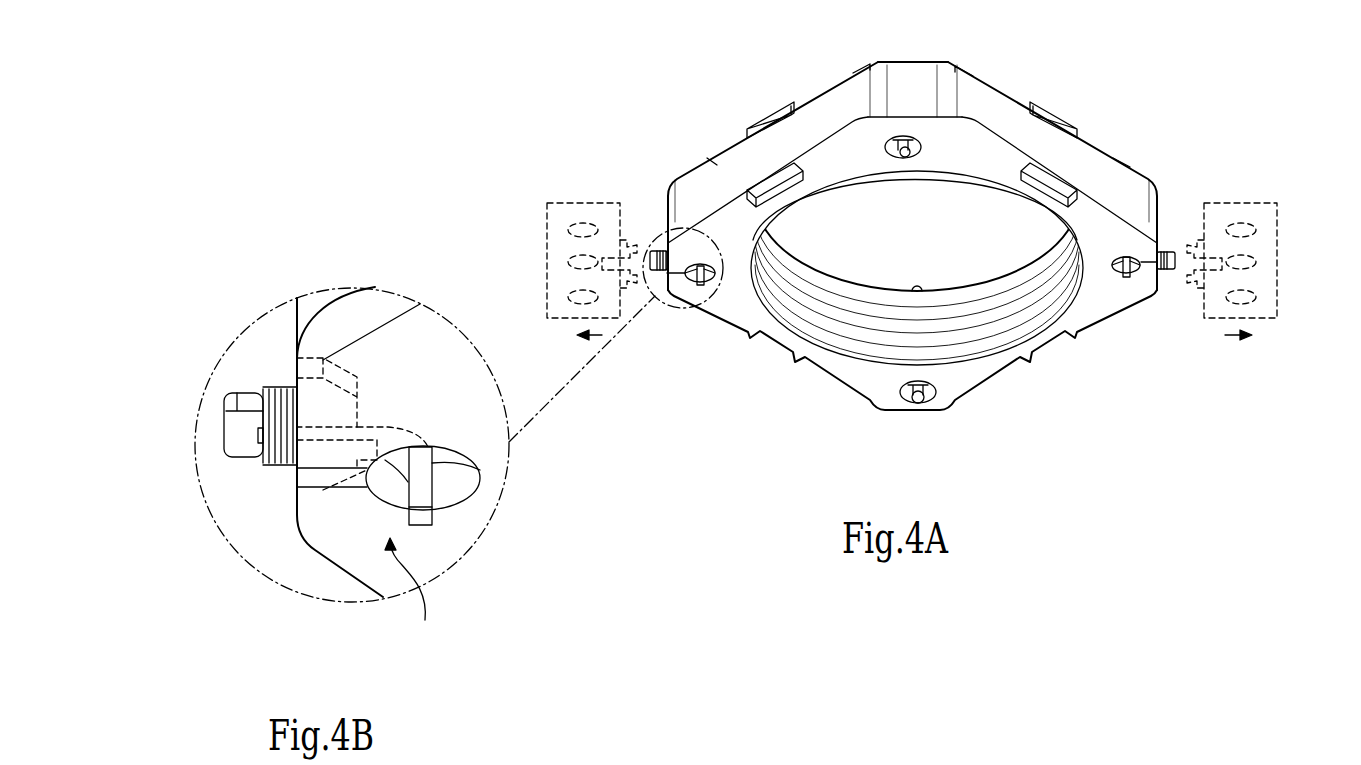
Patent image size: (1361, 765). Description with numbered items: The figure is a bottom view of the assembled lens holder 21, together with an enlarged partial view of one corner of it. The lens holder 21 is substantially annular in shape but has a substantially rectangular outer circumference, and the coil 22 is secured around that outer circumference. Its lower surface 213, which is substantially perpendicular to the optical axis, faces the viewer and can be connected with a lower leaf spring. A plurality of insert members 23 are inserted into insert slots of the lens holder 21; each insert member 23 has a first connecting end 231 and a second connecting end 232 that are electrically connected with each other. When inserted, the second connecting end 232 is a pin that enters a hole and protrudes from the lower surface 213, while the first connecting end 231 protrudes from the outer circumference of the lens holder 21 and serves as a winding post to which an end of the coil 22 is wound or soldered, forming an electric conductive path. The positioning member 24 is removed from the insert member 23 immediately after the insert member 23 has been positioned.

In FIG. 4A, the lens holder 21 is at (1242, 91).
In FIG. 4A, the coil 22 is at (750, 157).
In FIG. 4B, the coil 22 is at (267, 383).
In FIG. 4B, the insert member 23 is at (200, 396).
In FIG. 4A, the positioning member 24 is at (555, 239).
In FIG. 4A, the lower surface 213 is at (740, 322).
In FIG. 4B, the lower surface 213 is at (332, 537).
In FIG. 4A, the first connecting end 231 is at (657, 247).
In FIG. 4B, the first connecting end 231 is at (243, 440).
In FIG. 4B, the second connecting end 232 is at (427, 517).